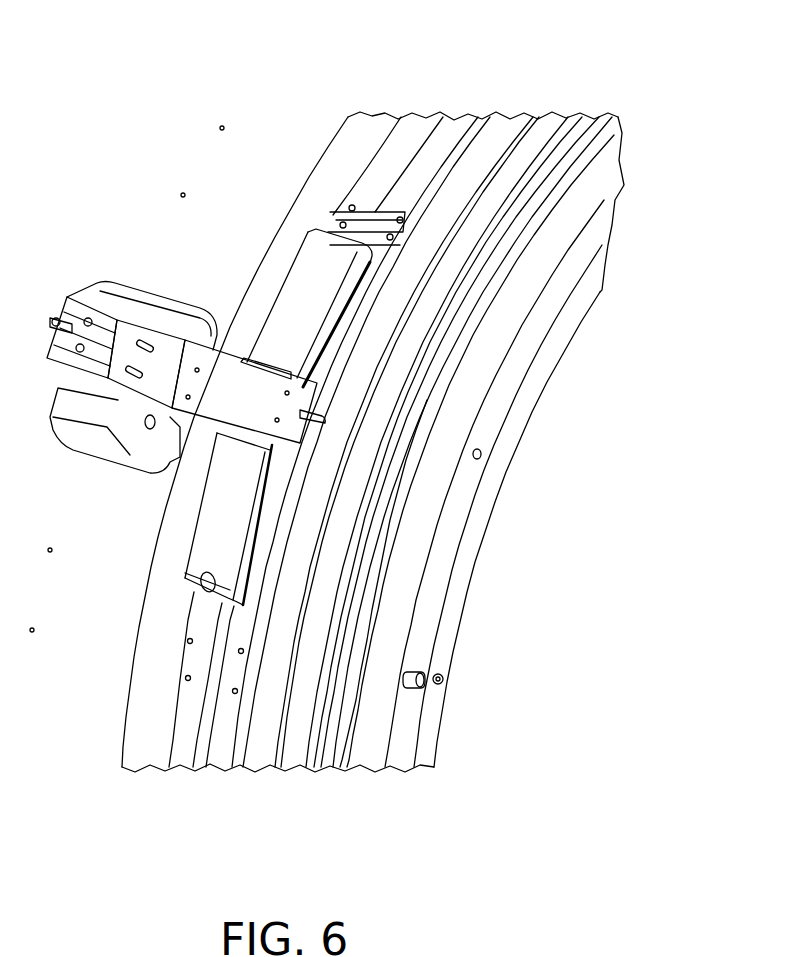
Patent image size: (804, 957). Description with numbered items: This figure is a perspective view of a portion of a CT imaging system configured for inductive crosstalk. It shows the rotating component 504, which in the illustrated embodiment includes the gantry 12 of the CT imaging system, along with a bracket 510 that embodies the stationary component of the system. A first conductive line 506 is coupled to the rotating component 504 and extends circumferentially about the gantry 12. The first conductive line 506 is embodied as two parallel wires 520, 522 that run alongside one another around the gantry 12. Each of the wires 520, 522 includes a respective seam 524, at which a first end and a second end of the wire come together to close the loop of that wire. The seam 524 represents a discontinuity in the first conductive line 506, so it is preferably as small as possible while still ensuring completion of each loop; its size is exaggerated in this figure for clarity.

The gantry 12 is at (568, 346).
The rotating component 504 is at (320, 152).
The first conductive line 506 is at (198, 740).
The bracket 510 is at (130, 292).
The wire 520 is at (340, 226).
The wire 522 is at (459, 118).
The seam 524 is at (400, 118).